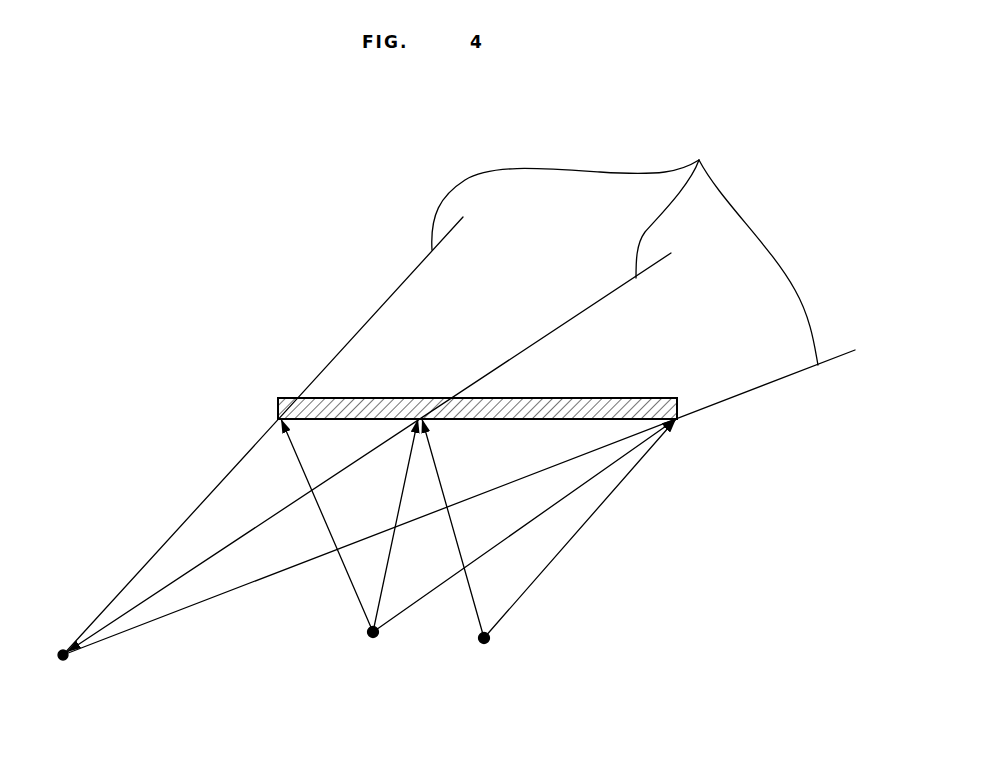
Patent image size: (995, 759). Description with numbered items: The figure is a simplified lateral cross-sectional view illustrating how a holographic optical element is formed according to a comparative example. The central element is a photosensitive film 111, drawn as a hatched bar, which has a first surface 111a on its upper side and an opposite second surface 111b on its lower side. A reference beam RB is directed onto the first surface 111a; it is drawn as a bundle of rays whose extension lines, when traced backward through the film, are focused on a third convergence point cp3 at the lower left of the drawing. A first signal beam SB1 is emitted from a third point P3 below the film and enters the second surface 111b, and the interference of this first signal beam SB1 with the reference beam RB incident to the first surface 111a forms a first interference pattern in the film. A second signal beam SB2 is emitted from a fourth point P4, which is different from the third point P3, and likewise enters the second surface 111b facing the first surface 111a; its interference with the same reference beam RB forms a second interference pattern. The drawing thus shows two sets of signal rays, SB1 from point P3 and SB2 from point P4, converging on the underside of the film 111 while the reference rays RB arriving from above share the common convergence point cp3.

The photosensitive film 111 is at (463, 402).
The first surface 111a is at (630, 397).
The second surface 111b is at (633, 419).
The reference beam RB is at (459, 395).
The third convergence point cp3 is at (63, 660).
The third point P3 is at (372, 638).
The fourth point P4 is at (484, 644).
The first signal beam SB1 is at (380, 602).
The second signal beam SB2 is at (462, 617).